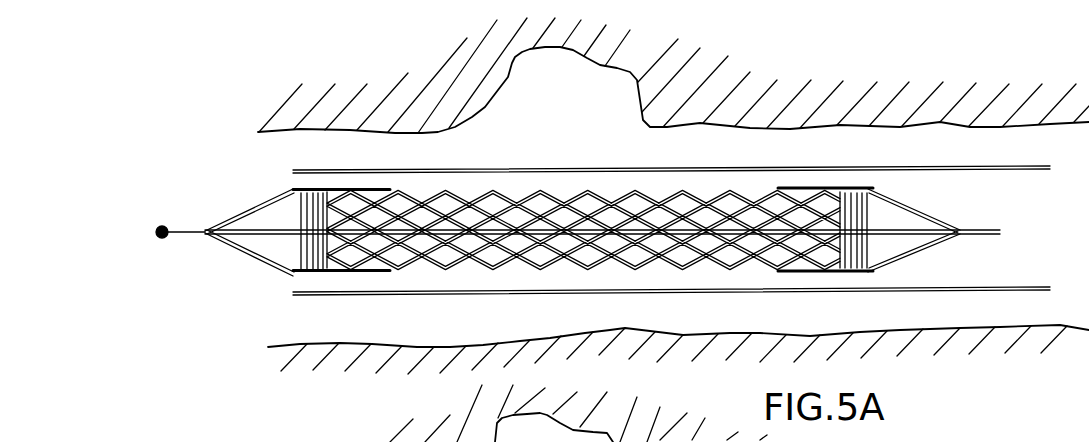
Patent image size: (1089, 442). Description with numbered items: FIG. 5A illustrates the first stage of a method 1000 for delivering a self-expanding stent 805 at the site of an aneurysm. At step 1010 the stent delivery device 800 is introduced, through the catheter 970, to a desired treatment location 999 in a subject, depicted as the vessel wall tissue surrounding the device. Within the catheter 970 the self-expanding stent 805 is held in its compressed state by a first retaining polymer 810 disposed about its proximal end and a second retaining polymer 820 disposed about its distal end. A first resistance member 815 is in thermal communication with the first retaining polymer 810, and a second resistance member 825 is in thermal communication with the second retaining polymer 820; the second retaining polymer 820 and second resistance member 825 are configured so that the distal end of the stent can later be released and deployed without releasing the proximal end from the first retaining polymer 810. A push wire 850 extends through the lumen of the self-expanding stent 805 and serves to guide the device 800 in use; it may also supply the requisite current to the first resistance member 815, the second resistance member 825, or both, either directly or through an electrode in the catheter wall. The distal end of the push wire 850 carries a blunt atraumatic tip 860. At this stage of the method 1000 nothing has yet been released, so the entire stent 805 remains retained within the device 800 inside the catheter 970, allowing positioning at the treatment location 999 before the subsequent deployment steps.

The method 1000 is at (180, 68).
The treatment location 999 is at (508, 133).
The self-expanding stent 805 is at (690, 192).
The catheter 970 is at (966, 168).
The second resistance member 825 is at (298, 222).
The step 1010 is at (143, 243).
The blunt atraumatic tip 860 is at (158, 245).
The push wire 850 is at (189, 237).
The second retaining polymer 820 is at (253, 259).
The stent delivery device 800 is at (867, 179).
The first resistance member 815 is at (868, 236).
The first retaining polymer 810 is at (903, 257).